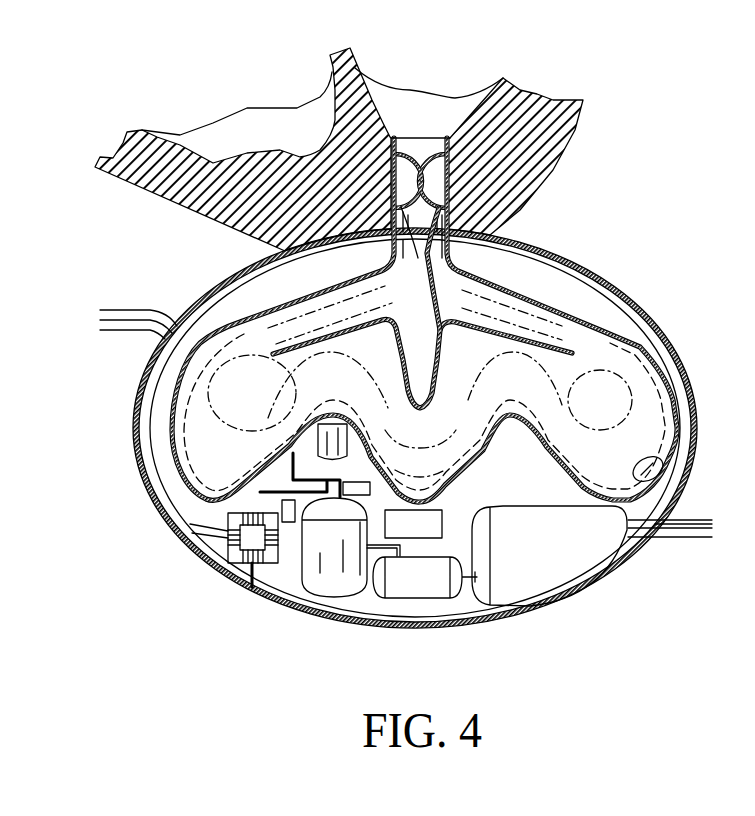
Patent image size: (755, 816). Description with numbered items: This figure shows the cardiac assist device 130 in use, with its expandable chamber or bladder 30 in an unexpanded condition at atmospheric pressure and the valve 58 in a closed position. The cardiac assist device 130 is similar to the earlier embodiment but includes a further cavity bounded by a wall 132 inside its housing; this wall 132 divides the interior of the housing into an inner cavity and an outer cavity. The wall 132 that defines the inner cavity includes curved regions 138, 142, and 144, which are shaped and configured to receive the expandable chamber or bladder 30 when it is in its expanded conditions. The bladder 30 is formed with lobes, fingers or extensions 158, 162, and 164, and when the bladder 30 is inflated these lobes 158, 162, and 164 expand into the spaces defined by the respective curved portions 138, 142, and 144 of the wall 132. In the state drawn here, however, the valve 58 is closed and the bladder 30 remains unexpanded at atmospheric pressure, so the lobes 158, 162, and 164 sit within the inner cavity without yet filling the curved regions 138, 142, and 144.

The expandable chamber or bladder 30 is at (418, 300).
The valve 58 is at (410, 160).
The cardiac assist device 130 is at (563, 215).
The wall 132 is at (550, 297).
The curved region 138 is at (662, 485).
The curved region 142 is at (466, 478).
The curved region 144 is at (220, 497).
The lobe 158 is at (560, 360).
The lobe 162 is at (427, 377).
The lobe 164 is at (268, 358).